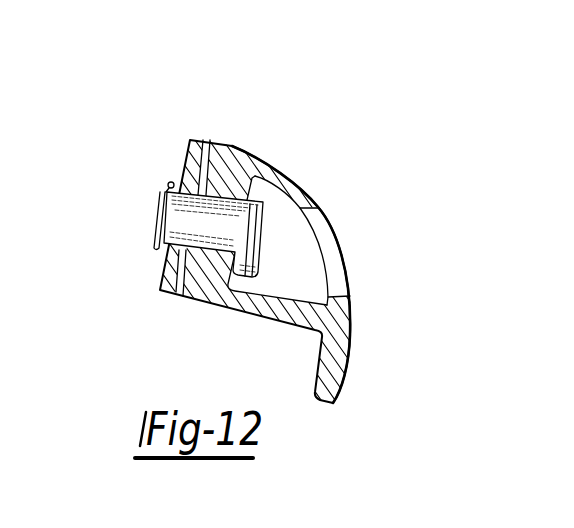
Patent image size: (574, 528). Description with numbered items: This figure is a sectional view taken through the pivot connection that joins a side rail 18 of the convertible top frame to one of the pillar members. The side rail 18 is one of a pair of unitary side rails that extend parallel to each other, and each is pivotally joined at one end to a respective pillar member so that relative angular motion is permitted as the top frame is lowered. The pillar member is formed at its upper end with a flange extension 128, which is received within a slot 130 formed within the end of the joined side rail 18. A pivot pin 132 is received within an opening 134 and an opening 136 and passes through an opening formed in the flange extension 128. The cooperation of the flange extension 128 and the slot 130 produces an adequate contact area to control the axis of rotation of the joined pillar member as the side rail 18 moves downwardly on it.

The side rail 18 is at (320, 188).
The flange extension 128 is at (221, 166).
The slot 130 is at (215, 156).
The pivot pin 132 is at (180, 216).
The opening 134 is at (351, 278).
The opening 136 is at (220, 246).